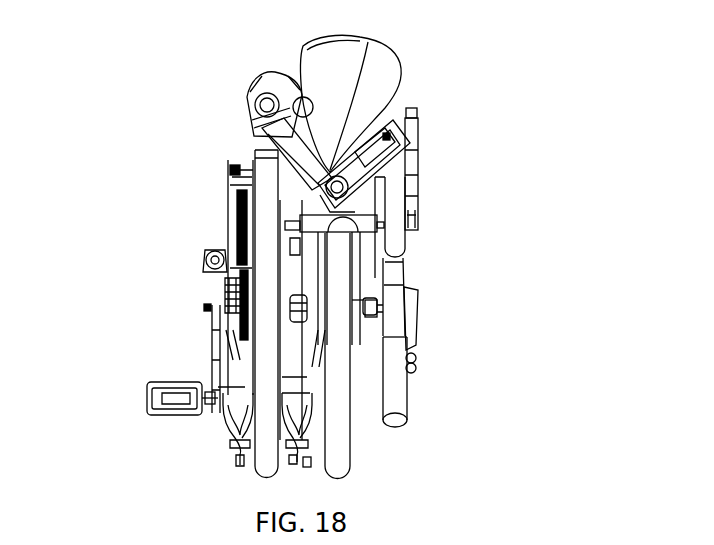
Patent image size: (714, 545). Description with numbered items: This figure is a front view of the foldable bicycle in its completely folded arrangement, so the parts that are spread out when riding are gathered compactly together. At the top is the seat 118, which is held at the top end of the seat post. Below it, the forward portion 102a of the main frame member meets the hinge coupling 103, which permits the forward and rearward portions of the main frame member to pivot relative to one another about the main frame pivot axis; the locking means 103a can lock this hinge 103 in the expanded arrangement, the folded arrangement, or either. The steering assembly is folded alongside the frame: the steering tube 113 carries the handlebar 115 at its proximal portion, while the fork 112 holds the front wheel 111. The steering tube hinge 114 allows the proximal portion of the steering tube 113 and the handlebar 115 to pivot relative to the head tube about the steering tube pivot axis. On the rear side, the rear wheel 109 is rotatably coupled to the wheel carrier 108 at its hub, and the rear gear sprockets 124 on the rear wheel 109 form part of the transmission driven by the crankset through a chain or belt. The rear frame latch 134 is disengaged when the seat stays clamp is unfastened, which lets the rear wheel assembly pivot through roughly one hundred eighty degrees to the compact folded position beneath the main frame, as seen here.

The seat 118 is at (398, 63).
The hinge coupling 103 is at (242, 122).
The locking means 103a is at (272, 152).
The forward portion of main frame member 102a is at (292, 173).
The rear gear sprockets 124 is at (207, 306).
The wheel carrier 108 is at (313, 365).
The rear frame latch 134 is at (223, 438).
The rear wheel 109 is at (250, 465).
The steering tube hinge 114 is at (358, 191).
The steering tube 113 is at (403, 239).
The fork 112 is at (377, 278).
The handlebar 115 is at (408, 395).
The front wheel 111 is at (353, 467).